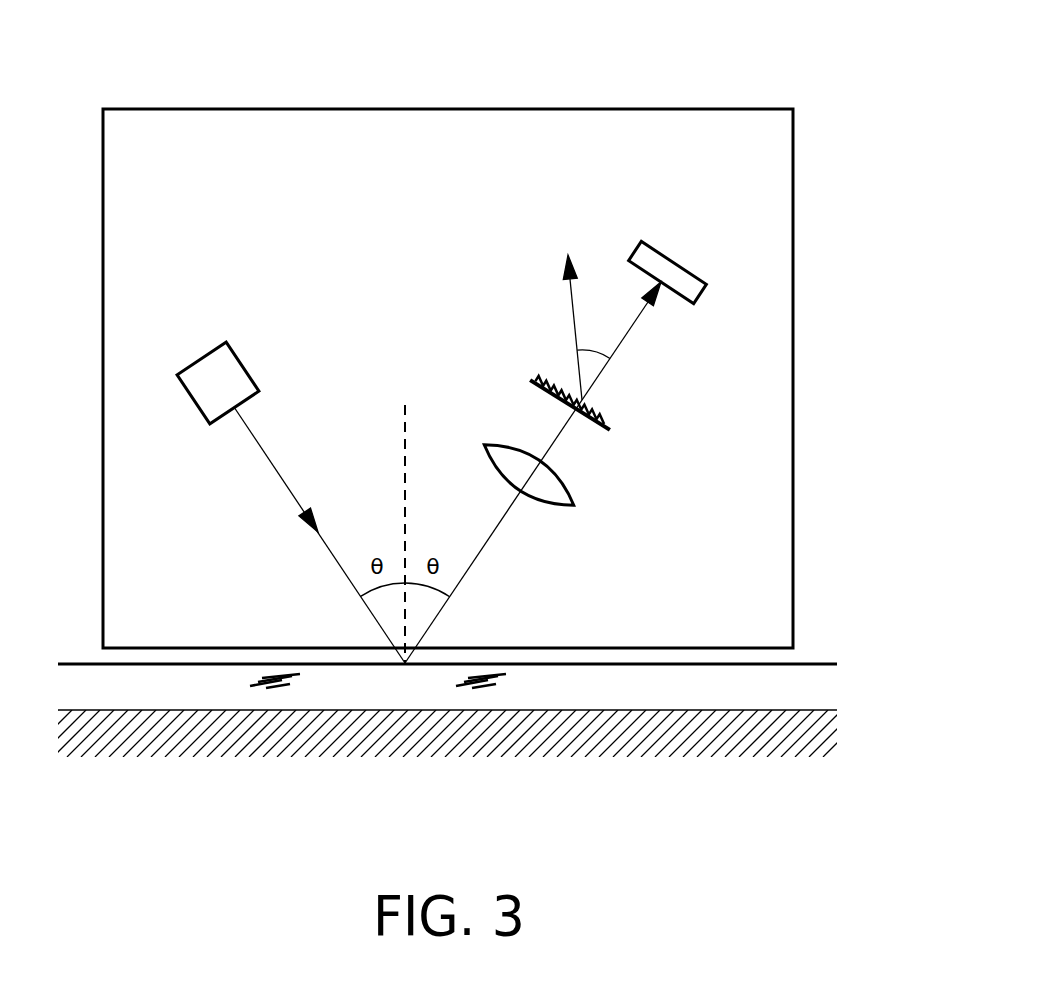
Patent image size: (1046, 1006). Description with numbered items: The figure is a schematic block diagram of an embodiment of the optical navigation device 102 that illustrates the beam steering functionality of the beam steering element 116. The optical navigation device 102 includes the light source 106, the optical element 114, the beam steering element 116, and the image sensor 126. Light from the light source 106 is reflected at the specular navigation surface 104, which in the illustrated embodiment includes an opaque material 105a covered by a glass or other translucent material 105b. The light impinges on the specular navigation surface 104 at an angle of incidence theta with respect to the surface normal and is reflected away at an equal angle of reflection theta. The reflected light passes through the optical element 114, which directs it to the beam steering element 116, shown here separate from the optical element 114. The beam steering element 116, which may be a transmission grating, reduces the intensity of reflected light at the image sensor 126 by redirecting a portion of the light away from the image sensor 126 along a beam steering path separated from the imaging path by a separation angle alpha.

The optical navigation device 102 is at (297, 109).
The specular navigation surface 104 is at (826, 652).
The opaque material 105a is at (815, 737).
The translucent material 105b is at (815, 692).
The light source 106 is at (238, 355).
The optical element 114 is at (573, 487).
The beam steering element 116 is at (612, 418).
The image sensor 126 is at (665, 260).